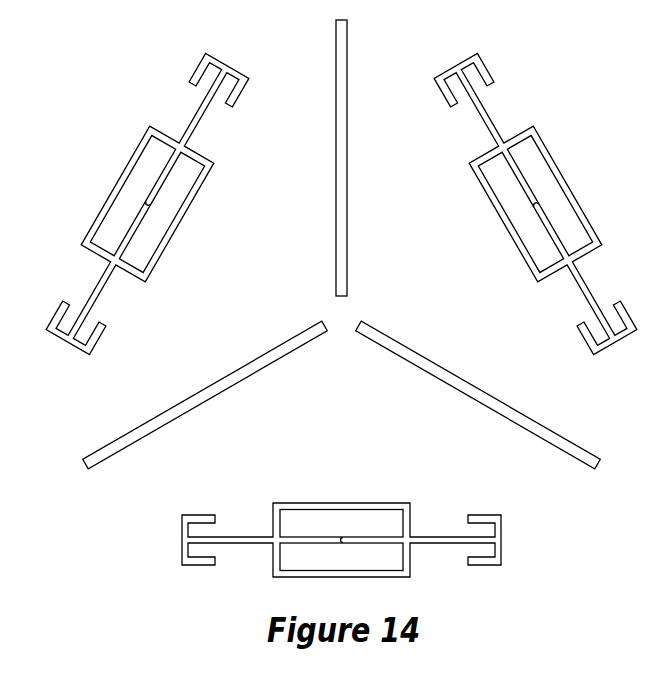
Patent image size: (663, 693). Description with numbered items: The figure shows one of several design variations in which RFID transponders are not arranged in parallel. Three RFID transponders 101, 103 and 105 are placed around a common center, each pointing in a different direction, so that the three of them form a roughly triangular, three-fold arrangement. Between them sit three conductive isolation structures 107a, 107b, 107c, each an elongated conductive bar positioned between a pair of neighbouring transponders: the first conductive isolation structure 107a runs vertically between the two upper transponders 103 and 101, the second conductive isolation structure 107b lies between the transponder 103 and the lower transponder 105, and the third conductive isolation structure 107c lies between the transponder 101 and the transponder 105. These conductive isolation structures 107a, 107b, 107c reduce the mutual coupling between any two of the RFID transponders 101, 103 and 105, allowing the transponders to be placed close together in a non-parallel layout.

The RFID transponder 101 is at (582, 173).
The RFID transponder 103 is at (98, 172).
The RFID transponder 105 is at (515, 527).
The conductive isolation structure 107a is at (348, 195).
The conductive isolation structure 107b is at (217, 378).
The conductive isolation structure 107c is at (468, 380).